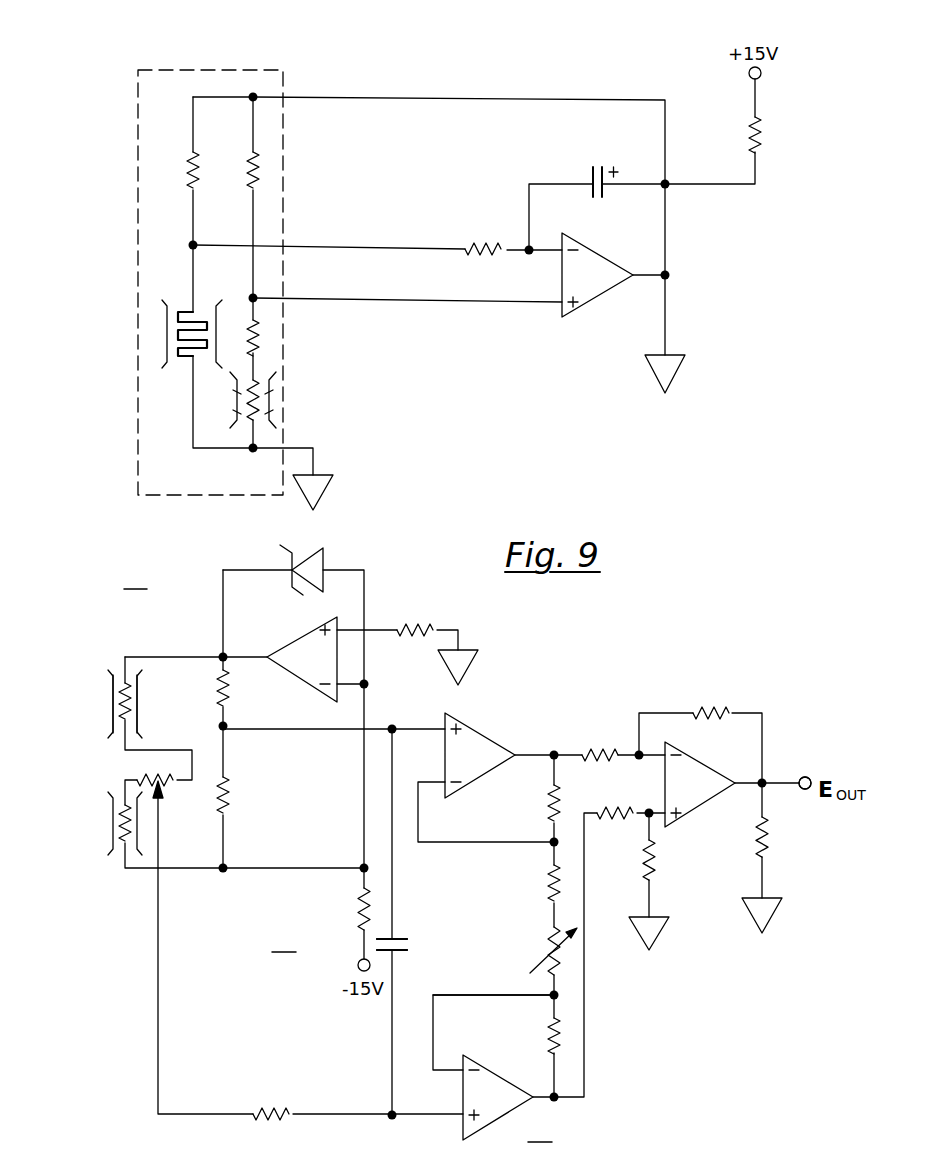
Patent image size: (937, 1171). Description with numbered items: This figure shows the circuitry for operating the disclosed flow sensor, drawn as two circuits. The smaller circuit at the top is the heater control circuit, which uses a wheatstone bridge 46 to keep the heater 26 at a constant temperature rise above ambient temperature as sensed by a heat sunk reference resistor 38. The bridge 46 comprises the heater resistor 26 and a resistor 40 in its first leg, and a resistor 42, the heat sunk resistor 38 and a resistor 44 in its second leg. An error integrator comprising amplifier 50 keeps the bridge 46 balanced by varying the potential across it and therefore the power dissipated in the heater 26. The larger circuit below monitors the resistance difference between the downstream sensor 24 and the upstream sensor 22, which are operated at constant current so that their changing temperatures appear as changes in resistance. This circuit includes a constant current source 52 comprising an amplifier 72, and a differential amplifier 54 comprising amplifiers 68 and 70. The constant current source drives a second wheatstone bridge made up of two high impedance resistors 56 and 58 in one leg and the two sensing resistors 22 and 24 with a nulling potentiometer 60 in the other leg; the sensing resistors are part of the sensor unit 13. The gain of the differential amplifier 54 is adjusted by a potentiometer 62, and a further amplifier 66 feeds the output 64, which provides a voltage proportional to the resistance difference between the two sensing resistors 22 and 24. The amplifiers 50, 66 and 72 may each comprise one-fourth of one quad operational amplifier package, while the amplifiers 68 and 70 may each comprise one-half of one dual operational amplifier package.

The sensor unit 13 is at (131, 649).
The upstream sensor 22 is at (113, 702).
The downstream sensor 24 is at (113, 822).
The heater 26 is at (166, 333).
The heat sunk reference resistor 38 is at (268, 403).
The resistor 40 is at (204, 166).
The resistor 42 is at (262, 175).
The resistor 44 is at (263, 333).
The wheatstone bridge 46 is at (208, 68).
The amplifier 50 is at (600, 262).
The constant current source 52 is at (339, 941).
The differential amplifier 54 is at (493, 1069).
The high impedance resistor 56 is at (232, 794).
The high impedance resistor 58 is at (232, 690).
The nulling potentiometer 60 is at (177, 782).
The potentiometer 62 is at (548, 944).
The output 64 is at (803, 789).
The amplifier 66 is at (696, 800).
The amplifier 68 is at (472, 772).
The amplifier 70 is at (490, 1084).
The amplifier 72 is at (306, 642).